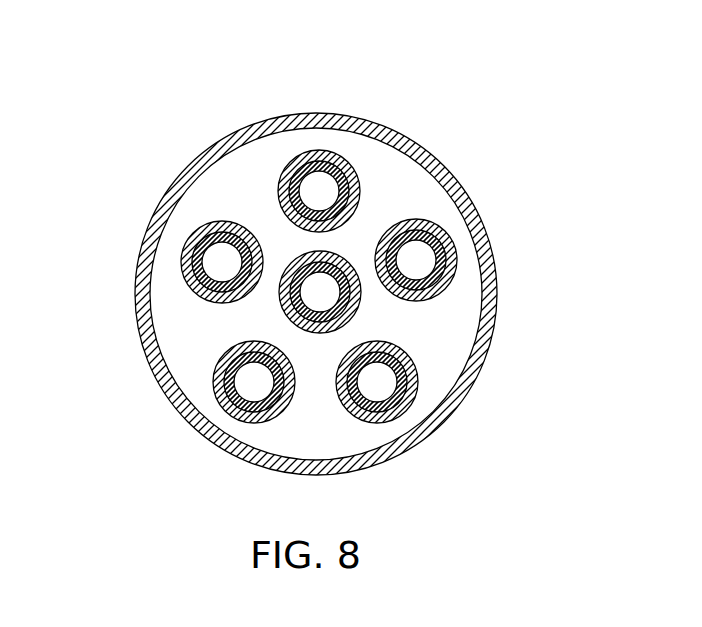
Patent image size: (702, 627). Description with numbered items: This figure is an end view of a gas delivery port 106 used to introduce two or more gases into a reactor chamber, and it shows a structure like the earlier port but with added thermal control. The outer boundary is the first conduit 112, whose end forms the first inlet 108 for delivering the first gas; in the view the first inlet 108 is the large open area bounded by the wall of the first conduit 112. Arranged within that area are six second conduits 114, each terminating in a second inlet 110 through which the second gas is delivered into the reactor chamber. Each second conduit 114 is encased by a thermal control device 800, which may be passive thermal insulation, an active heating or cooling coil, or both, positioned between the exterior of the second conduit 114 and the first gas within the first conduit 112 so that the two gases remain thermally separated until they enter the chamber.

The gas delivery port 106 is at (102, 122).
The first inlet 108 is at (232, 180).
The second inlets 110 is at (220, 262).
The first conduit 112 is at (458, 185).
The second conduits 114 is at (349, 263).
The thermal control device 800 is at (438, 292).